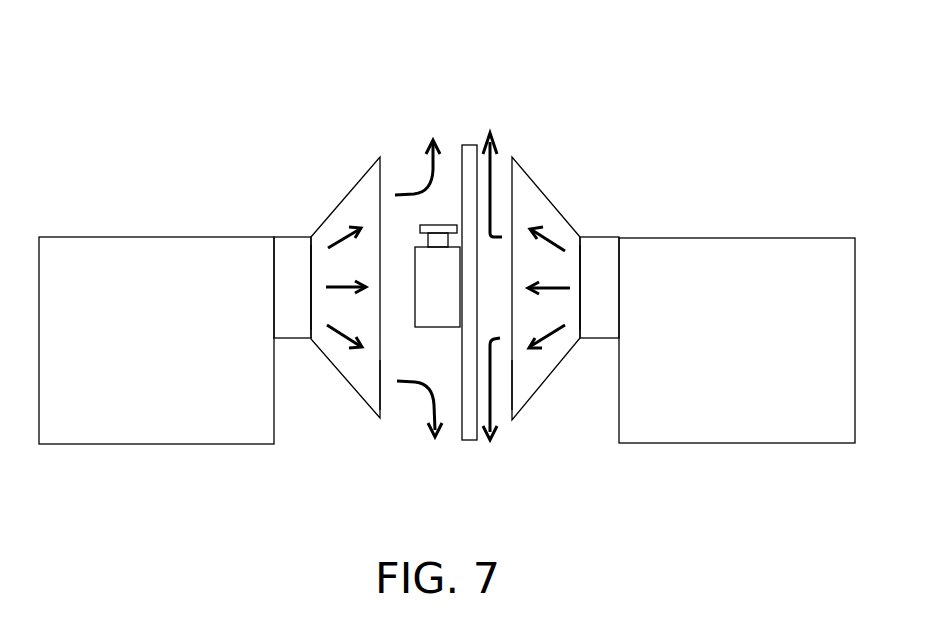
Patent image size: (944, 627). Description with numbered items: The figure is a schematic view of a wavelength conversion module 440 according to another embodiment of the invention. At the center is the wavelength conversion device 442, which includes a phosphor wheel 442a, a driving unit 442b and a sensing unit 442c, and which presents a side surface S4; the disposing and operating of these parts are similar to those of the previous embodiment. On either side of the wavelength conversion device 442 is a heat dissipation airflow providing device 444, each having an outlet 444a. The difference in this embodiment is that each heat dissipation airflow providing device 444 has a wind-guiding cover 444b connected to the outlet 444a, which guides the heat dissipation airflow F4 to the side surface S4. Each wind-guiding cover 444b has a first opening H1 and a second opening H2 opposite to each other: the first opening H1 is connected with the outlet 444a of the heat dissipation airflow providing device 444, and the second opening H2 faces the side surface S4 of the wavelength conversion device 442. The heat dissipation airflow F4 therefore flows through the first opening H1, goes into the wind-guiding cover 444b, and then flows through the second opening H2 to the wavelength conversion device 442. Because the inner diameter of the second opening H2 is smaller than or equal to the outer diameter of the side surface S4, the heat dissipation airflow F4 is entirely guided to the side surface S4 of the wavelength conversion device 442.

The wavelength conversion module 440 is at (839, 528).
The wavelength conversion device 442 is at (468, 251).
The phosphor wheel 442a is at (471, 144).
The driving unit 442b is at (428, 273).
The sensing unit 442c is at (448, 224).
The heat dissipation airflow providing device 444 is at (98, 252).
The outlet 444a is at (310, 280).
The wind-guiding cover 444b is at (340, 200).
The first opening H1 is at (314, 268).
The second opening H2 is at (377, 380).
The heat dissipation airflow F4 is at (495, 393).
The side surface S4 is at (486, 382).